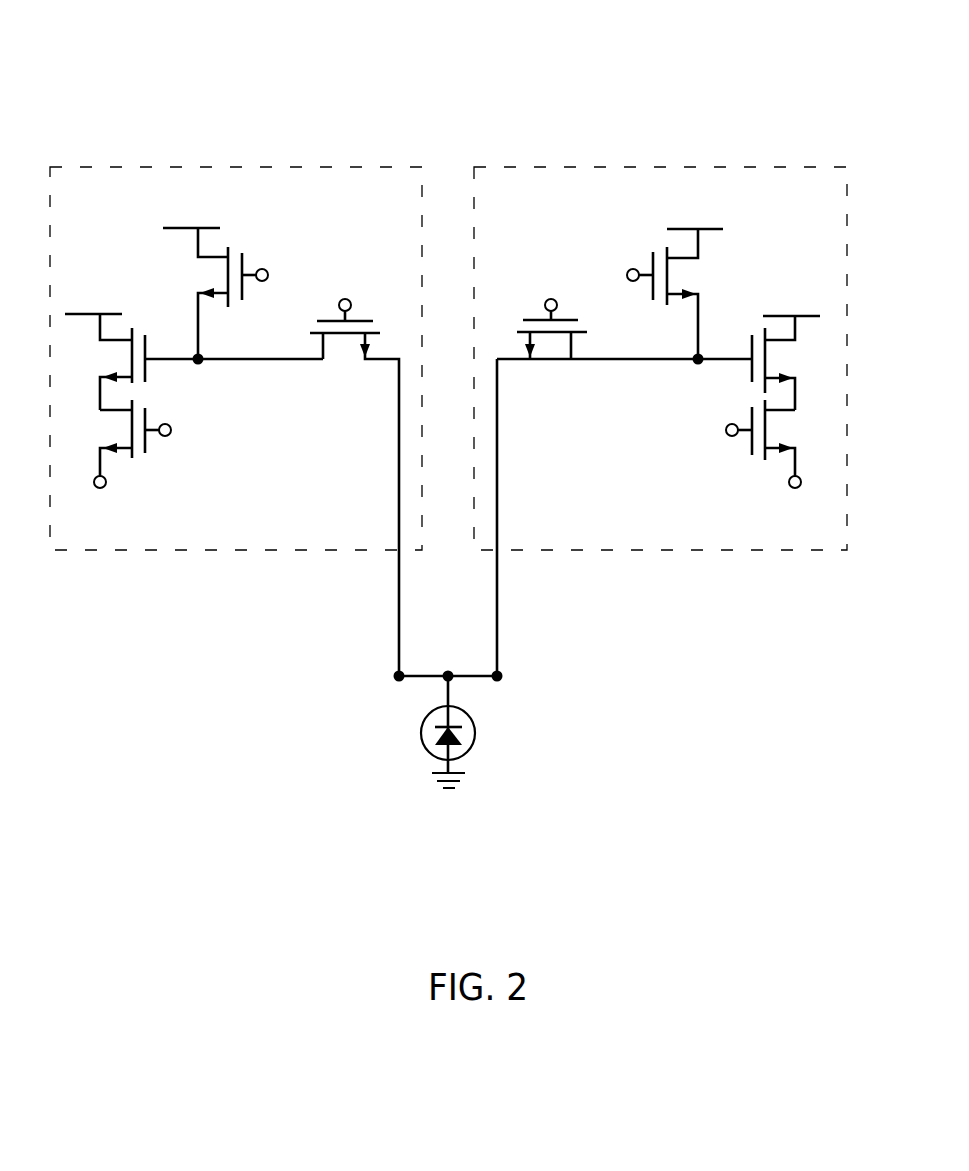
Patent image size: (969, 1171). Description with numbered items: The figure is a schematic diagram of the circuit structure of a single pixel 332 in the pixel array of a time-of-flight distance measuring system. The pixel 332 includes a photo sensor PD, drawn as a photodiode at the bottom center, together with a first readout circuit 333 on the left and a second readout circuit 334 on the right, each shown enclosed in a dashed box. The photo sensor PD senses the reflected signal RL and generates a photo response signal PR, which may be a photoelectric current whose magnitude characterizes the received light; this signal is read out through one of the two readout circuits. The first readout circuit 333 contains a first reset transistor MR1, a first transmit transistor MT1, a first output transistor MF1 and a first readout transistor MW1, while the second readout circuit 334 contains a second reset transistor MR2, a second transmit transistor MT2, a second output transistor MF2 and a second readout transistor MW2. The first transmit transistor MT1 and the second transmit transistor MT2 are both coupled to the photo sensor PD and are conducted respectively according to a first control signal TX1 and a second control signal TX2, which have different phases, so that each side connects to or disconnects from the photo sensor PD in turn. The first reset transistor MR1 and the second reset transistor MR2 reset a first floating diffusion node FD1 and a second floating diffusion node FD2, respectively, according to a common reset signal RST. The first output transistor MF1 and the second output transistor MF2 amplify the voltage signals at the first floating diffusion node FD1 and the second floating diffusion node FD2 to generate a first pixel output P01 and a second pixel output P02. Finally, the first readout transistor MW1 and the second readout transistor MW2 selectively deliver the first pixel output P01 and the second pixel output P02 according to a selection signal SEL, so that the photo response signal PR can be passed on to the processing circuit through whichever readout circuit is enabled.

The pixel 332 is at (540, 7).
The first readout circuit 333 is at (235, 166).
The second readout circuit 334 is at (690, 166).
The first reset transistor MR1 is at (192, 293).
The first output transistor MF1 is at (128, 362).
The first readout transistor MW1 is at (101, 444).
The first floating diffusion node FD1 is at (258, 377).
The first transmit transistor MT1 is at (354, 498).
The first control signal TX1 is at (336, 294).
The second reset transistor MR2 is at (698, 294).
The second output transistor MF2 is at (791, 363).
The second readout transistor MW2 is at (791, 444).
The second floating diffusion node FD2 is at (679, 378).
The second transmit transistor MT2 is at (624, 498).
The second control signal TX2 is at (544, 293).
The reset signal RST is at (447, 258).
The selection signal SEL is at (448, 433).
The photo sensor PD is at (452, 730).
The photo response signal PR is at (413, 706).
The reflected signal RL is at (635, 665).
The first pixel output P01 is at (87, 513).
The second pixel output P02 is at (795, 508).